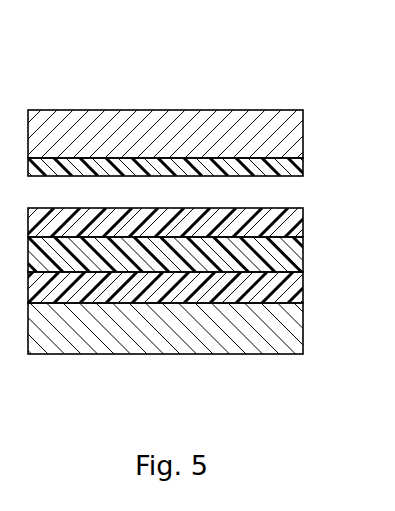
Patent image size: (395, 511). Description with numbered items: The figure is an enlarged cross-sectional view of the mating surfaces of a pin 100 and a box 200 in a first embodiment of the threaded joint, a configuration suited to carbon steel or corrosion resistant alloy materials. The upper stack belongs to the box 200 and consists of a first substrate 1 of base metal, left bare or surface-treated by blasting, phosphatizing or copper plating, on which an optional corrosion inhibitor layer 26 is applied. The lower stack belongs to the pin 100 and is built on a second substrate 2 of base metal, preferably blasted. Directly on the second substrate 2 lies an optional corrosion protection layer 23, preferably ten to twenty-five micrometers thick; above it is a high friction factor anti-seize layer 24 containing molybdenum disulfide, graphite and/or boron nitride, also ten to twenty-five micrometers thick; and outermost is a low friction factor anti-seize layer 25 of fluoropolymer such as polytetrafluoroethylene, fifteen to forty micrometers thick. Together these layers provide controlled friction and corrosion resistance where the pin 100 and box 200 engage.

The box 200 is at (186, 98).
The first substrate 1 is at (275, 133).
The corrosion inhibitor layer 26 is at (292, 170).
The pin 100 is at (186, 303).
The low friction factor anti-seize layer 25 is at (280, 230).
The high friction factor anti-seize layer 24 is at (283, 257).
The corrosion protection layer 23 is at (288, 295).
The second substrate 2 is at (280, 338).